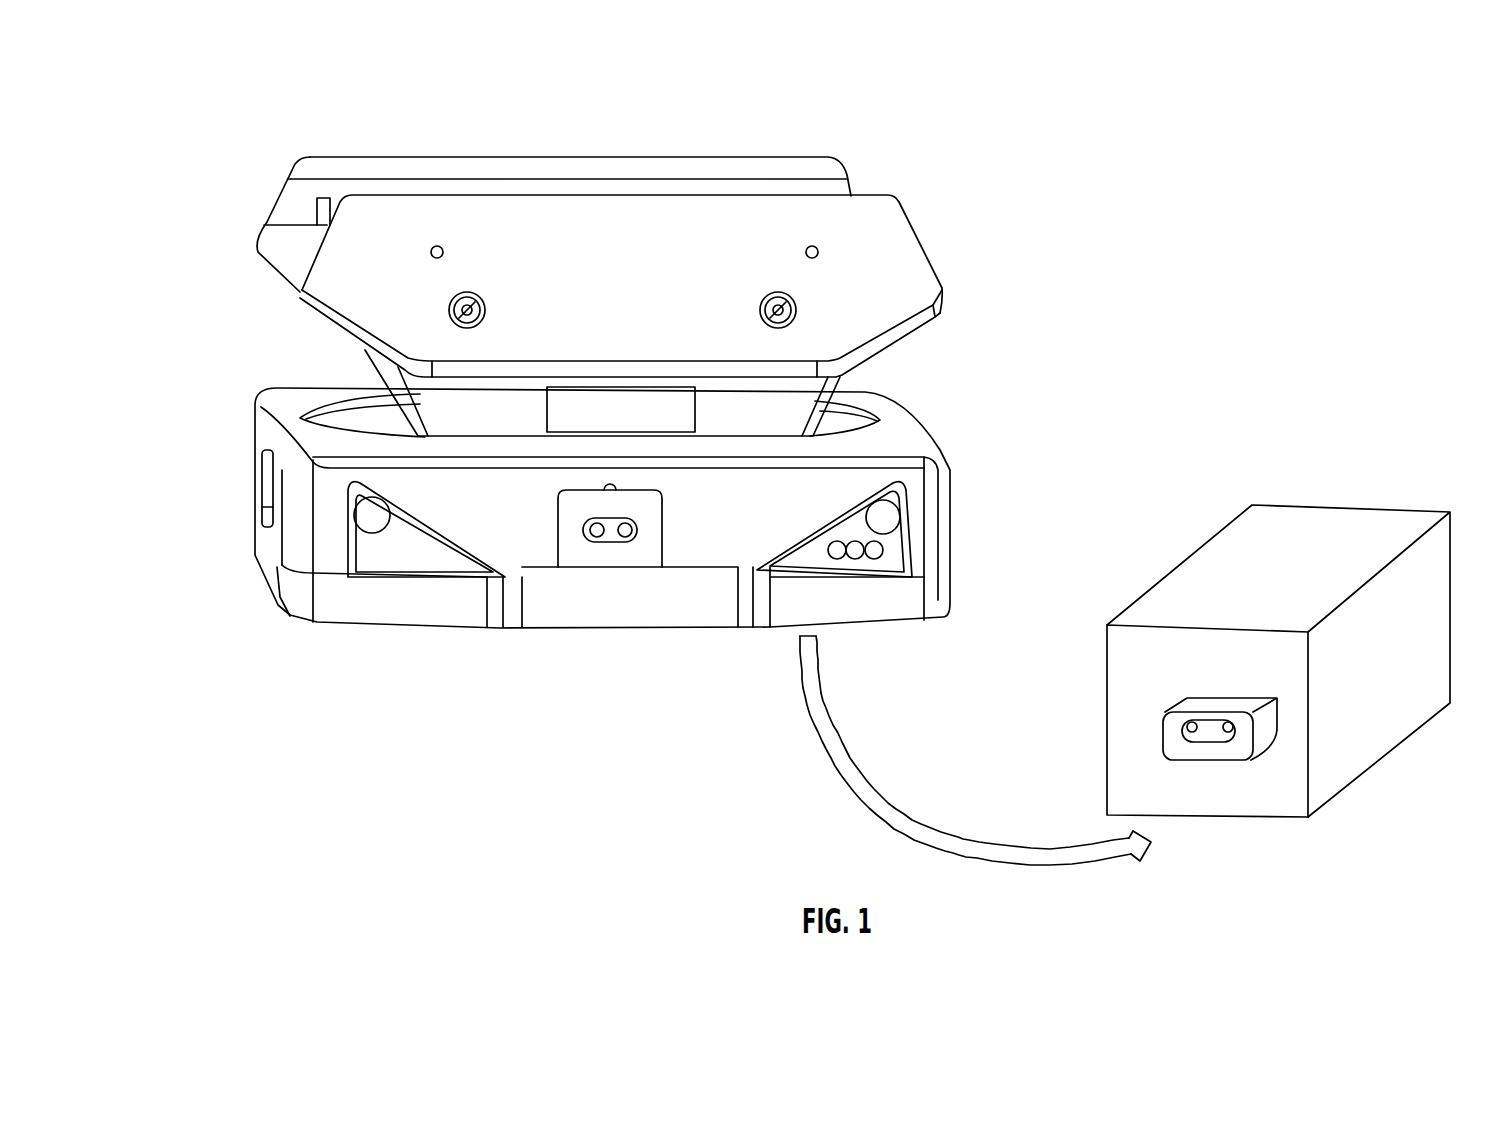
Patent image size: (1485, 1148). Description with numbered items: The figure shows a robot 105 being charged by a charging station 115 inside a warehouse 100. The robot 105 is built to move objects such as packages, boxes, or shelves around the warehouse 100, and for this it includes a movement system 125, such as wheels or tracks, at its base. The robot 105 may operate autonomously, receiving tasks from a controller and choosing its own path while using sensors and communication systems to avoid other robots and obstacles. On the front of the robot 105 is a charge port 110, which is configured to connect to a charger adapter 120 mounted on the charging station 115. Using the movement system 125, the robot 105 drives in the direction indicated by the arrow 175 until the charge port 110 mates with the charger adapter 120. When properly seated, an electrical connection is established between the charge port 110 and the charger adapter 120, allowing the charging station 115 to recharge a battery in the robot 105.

The warehouse 100 is at (294, 118).
The robot 105 is at (887, 198).
The charge port 110 is at (633, 557).
The charging station 115 is at (1272, 505).
The charger adapter 120 is at (1267, 728).
The movement system 125 is at (272, 535).
The arrow 175 is at (832, 760).